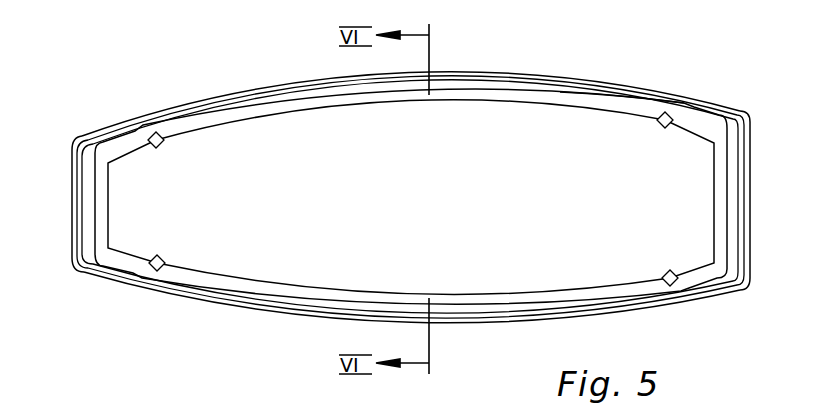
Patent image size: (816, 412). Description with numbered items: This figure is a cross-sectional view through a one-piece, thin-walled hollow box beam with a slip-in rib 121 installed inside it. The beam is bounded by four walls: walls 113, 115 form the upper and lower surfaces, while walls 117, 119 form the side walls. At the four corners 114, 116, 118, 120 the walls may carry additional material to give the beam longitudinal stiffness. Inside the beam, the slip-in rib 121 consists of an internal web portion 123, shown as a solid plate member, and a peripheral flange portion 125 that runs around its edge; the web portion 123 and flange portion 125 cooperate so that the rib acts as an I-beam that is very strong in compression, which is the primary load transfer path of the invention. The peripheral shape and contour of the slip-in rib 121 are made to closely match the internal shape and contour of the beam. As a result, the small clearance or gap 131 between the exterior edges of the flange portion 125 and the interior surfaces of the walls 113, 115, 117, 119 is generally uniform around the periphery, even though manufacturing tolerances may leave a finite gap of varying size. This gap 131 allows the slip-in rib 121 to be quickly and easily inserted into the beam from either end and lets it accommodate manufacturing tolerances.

The wall 113 is at (692, 303).
The corner 114 is at (724, 108).
The wall 115 is at (217, 97).
The corner 116 is at (734, 292).
The wall 117 is at (750, 231).
The corner 118 is at (93, 133).
The wall 119 is at (72, 209).
The corner 120 is at (103, 278).
The slip-in rib 121 is at (627, 92).
The web portion 123 is at (671, 190).
The flange portion 125 is at (85, 222).
The gap 131 is at (510, 78).